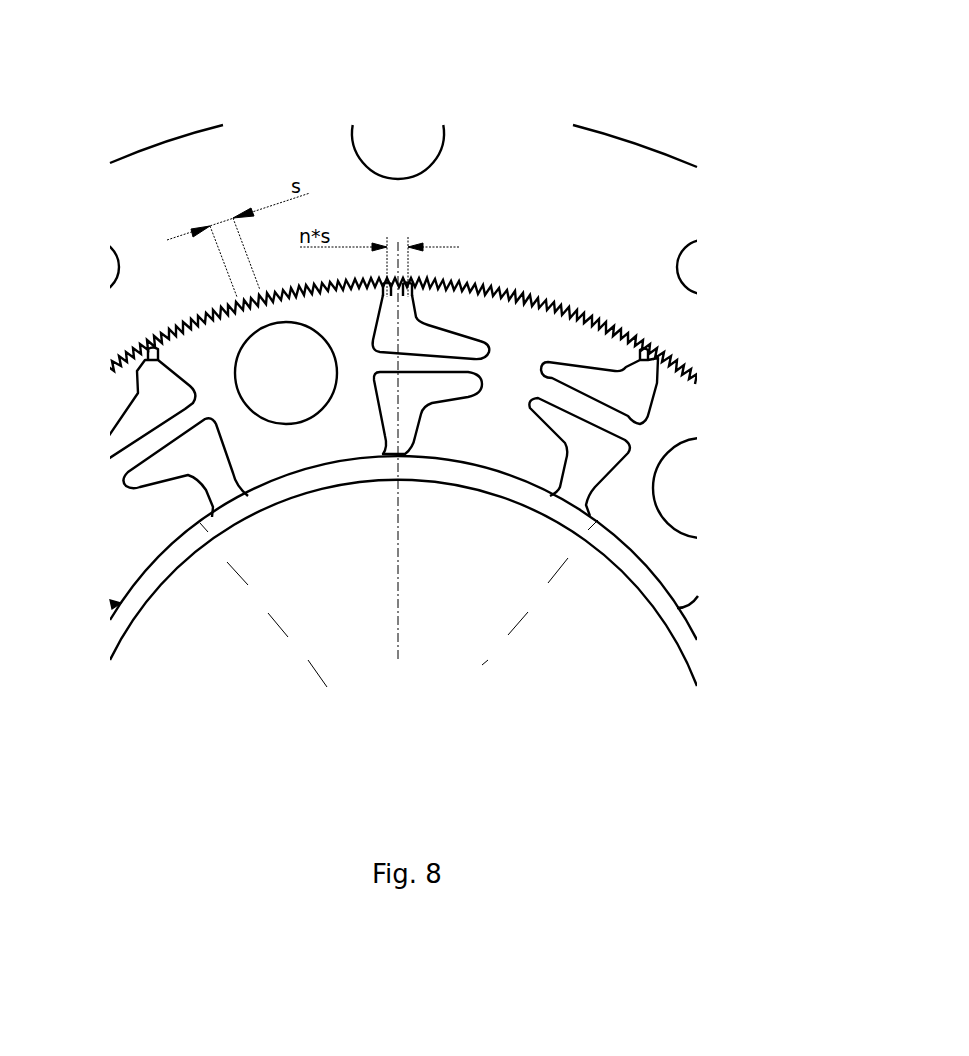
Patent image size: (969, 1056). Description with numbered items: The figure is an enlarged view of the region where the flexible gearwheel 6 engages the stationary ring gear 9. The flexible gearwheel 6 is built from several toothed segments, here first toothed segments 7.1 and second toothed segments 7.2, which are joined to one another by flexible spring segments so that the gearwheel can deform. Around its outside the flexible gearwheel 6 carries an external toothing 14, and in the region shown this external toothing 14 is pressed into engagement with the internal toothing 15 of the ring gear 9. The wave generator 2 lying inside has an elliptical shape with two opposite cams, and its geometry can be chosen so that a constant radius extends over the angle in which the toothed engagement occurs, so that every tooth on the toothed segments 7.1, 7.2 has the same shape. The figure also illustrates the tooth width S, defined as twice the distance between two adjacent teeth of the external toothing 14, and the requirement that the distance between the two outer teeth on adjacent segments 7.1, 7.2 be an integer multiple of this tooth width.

The wave generator 2 is at (705, 660).
The flexible gearwheel 6 is at (718, 483).
The first toothed segment 7.1 is at (172, 347).
The second toothed segment 7.2 is at (460, 307).
The ring gear 9 is at (602, 167).
The external toothing 14 is at (695, 378).
The internal toothing 15 is at (690, 365).